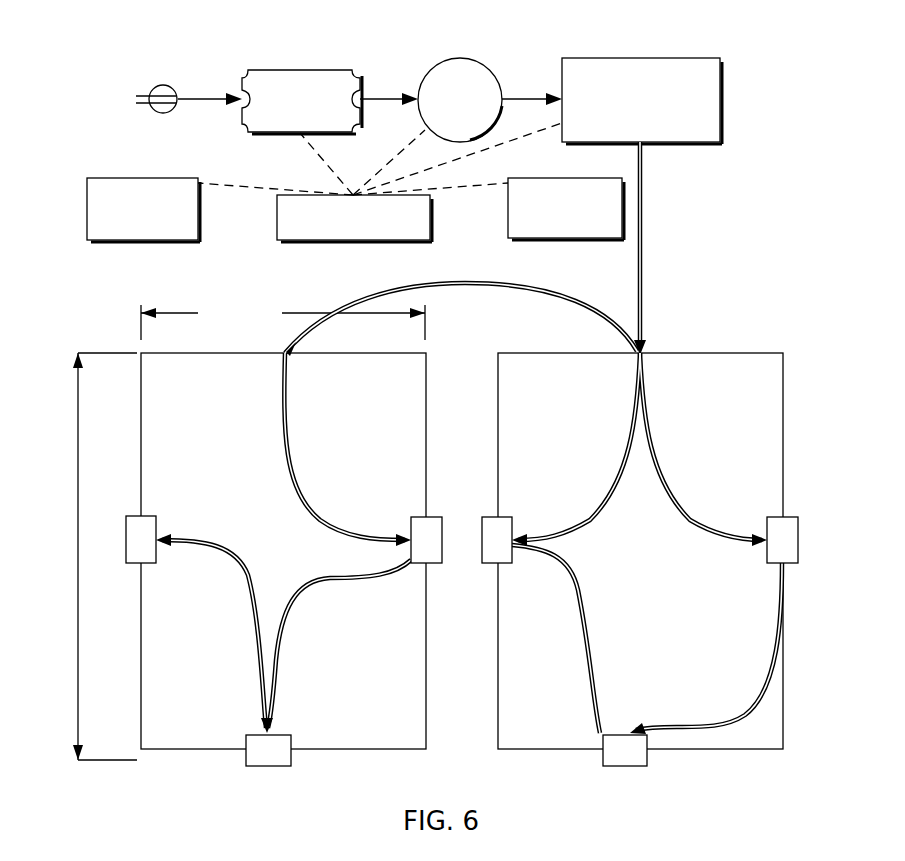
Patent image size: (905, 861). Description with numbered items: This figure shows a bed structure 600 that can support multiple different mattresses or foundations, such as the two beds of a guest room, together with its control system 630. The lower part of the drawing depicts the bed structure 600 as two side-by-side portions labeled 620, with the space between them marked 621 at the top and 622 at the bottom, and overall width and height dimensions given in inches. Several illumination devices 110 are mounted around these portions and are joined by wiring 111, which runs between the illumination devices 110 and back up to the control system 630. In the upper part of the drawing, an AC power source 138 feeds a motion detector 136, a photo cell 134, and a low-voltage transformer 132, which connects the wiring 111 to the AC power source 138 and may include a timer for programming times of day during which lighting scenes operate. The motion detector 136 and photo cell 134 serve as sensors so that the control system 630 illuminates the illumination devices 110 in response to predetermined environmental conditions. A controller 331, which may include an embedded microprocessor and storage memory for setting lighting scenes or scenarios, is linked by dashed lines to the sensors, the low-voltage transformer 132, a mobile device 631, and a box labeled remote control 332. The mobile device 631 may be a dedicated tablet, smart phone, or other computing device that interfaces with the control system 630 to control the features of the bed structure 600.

The control system 630 is at (122, 62).
The AC power source 138 is at (163, 86).
The motion detector 136 is at (298, 70).
The photo cell 134 is at (459, 57).
The low-voltage transformer 132 is at (641, 58).
The mobile device 631 is at (103, 178).
The controller 331 is at (277, 216).
The remote control 332 is at (508, 208).
The bed structure 600 is at (114, 308).
The panel 620 is at (141, 722).
The gap between panels (top) 621 is at (497, 369).
The gap between panels (bottom) 622 is at (415, 750).
The illumination devices 110 is at (148, 520).
The wiring 111 is at (348, 574).